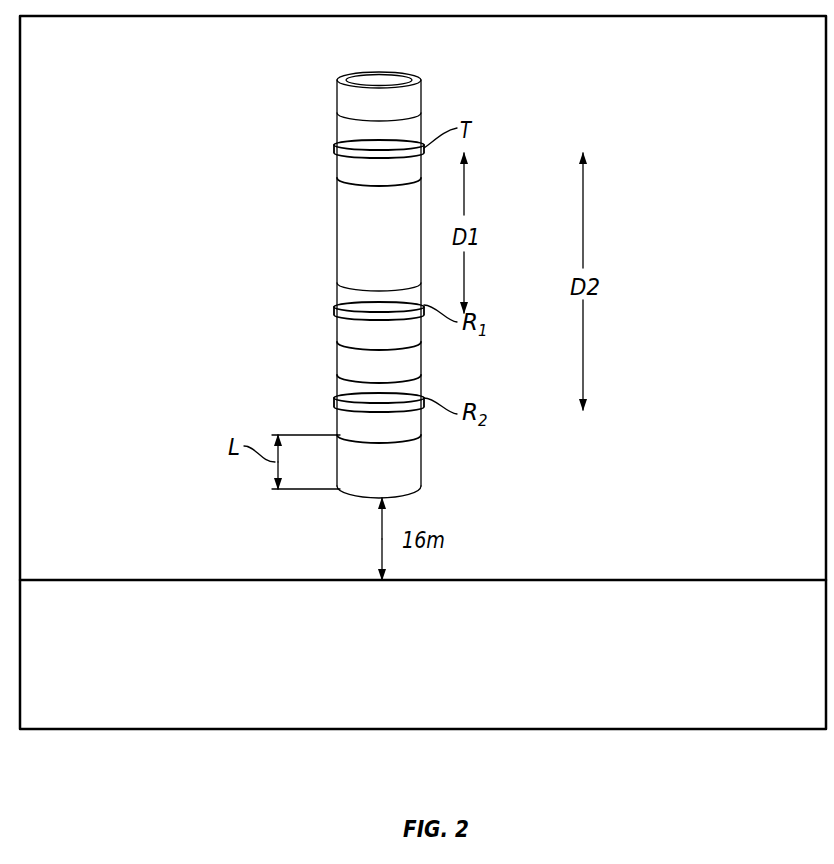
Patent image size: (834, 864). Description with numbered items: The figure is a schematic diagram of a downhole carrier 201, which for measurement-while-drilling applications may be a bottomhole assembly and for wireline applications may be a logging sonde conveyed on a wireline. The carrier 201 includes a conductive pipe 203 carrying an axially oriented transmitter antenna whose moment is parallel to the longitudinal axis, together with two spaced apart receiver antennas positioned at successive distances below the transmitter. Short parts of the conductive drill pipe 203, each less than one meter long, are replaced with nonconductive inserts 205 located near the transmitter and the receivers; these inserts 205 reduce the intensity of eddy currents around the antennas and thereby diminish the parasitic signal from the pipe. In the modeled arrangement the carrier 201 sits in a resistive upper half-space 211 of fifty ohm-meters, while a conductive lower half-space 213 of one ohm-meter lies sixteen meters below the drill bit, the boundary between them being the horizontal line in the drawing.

The downhole carrier 201 is at (362, 275).
The conductive pipe 203 is at (414, 101).
The nonconductive inserts 205 is at (353, 170).
The surrounding medium 211 is at (737, 309).
The ground surface 213 is at (463, 657).